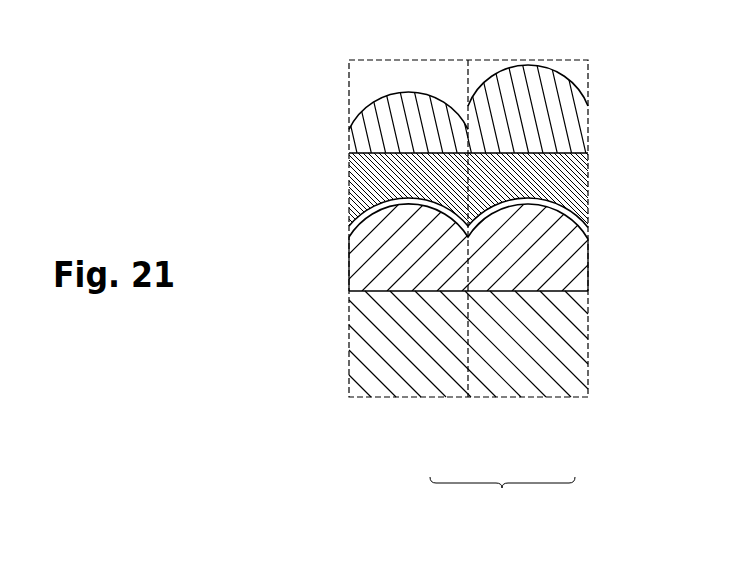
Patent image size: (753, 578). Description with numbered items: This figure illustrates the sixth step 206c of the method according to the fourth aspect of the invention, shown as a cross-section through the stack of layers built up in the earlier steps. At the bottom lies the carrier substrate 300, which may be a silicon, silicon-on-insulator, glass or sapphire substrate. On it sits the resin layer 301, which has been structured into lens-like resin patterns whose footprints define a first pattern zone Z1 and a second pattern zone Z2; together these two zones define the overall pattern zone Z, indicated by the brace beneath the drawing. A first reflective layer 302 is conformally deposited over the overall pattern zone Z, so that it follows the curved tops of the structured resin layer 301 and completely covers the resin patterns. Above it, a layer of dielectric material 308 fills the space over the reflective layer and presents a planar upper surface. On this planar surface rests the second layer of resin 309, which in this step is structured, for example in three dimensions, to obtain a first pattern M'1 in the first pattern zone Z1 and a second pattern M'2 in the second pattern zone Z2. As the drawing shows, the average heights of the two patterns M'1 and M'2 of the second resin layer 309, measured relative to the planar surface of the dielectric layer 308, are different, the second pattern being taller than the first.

The sixth step 206c is at (308, 155).
The carrier substrate 300 is at (367, 333).
The resin layer 301 is at (367, 258).
The first reflective layer 302 is at (553, 200).
The layer of dielectric material 308 is at (558, 170).
The second layer of resin 309 is at (553, 98).
The first pattern M'1 is at (412, 54).
The second pattern M'2 is at (532, 54).
The first pattern zone Z1 is at (440, 397).
The second pattern zone Z2 is at (538, 397).
The overall pattern zone Z is at (502, 497).